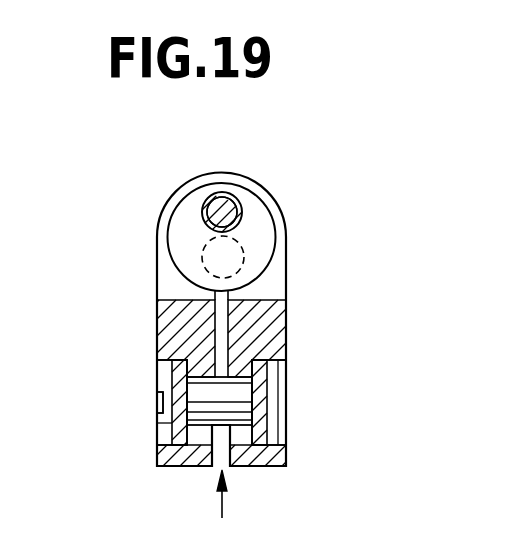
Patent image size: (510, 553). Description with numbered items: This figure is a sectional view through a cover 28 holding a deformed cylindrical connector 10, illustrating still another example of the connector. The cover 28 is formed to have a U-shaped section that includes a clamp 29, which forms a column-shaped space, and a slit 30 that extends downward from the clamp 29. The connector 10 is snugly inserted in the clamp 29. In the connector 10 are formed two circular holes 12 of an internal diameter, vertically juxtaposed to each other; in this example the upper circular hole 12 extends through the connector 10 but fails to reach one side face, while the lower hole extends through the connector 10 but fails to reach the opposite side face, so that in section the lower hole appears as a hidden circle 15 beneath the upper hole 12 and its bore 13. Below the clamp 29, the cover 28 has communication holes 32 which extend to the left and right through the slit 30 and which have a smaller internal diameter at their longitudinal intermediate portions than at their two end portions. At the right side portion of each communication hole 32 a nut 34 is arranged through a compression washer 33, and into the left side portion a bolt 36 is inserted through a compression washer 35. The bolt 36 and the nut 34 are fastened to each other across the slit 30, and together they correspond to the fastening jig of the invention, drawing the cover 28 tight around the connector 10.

The connector 10 is at (260, 226).
The circular hole 12 is at (237, 205).
The shaft bore 13 is at (205, 203).
The hidden bore 15 is at (245, 256).
The cover 28 is at (265, 317).
The clamp 29 is at (190, 258).
The slit 30 is at (220, 510).
The communication hole 32 is at (240, 385).
The compression washer 33 is at (272, 437).
The nut 34 is at (273, 400).
The compression washer 35 is at (182, 425).
The bolt 36 is at (166, 380).